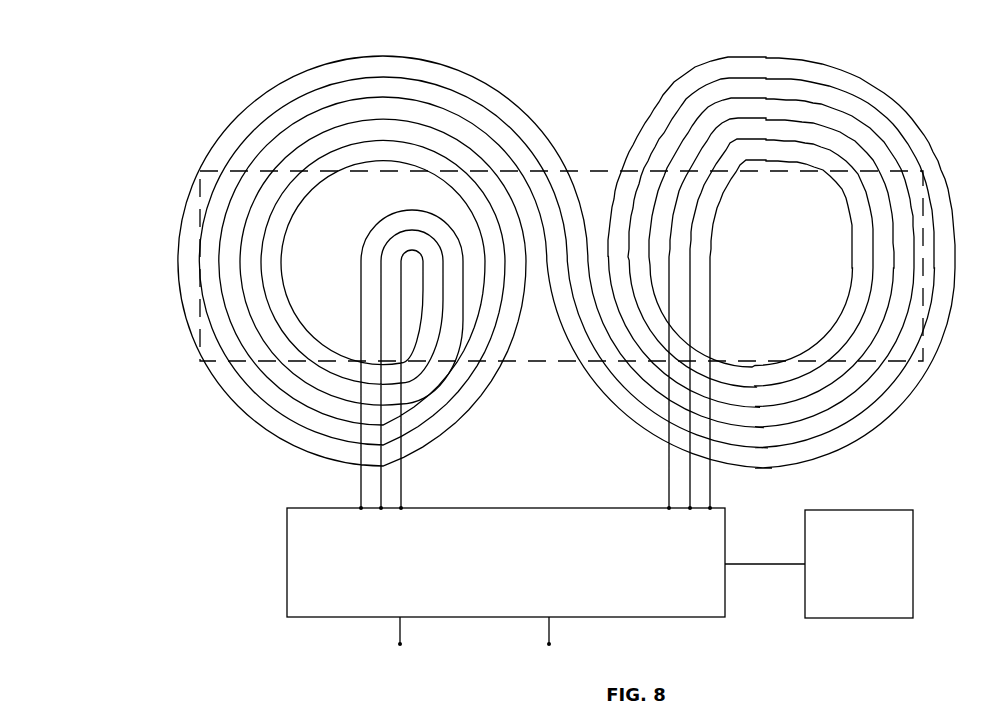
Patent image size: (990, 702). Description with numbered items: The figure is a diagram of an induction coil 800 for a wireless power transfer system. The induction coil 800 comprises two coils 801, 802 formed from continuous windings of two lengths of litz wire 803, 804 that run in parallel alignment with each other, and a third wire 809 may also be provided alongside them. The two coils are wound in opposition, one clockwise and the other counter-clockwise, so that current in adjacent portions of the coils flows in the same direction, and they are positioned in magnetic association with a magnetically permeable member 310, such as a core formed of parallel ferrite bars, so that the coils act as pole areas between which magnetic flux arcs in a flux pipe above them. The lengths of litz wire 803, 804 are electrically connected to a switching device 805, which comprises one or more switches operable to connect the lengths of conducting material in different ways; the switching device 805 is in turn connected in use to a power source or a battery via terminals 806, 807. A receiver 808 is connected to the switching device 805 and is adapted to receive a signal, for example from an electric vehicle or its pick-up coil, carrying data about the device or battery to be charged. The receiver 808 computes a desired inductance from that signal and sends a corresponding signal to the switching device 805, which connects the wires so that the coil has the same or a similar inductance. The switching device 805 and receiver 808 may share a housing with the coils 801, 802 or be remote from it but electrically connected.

The induction coil 800 is at (186, 88).
The coil 801 is at (314, 243).
The coil 802 is at (754, 263).
The litz wire 803 is at (252, 99).
The third wire 809 is at (430, 101).
The litz wire 804 is at (201, 212).
The magnetically permeable member 310 is at (926, 360).
The switching device 805 is at (287, 561).
The terminal 806 is at (395, 645).
The terminal 807 is at (555, 645).
The receiver 808 is at (862, 619).